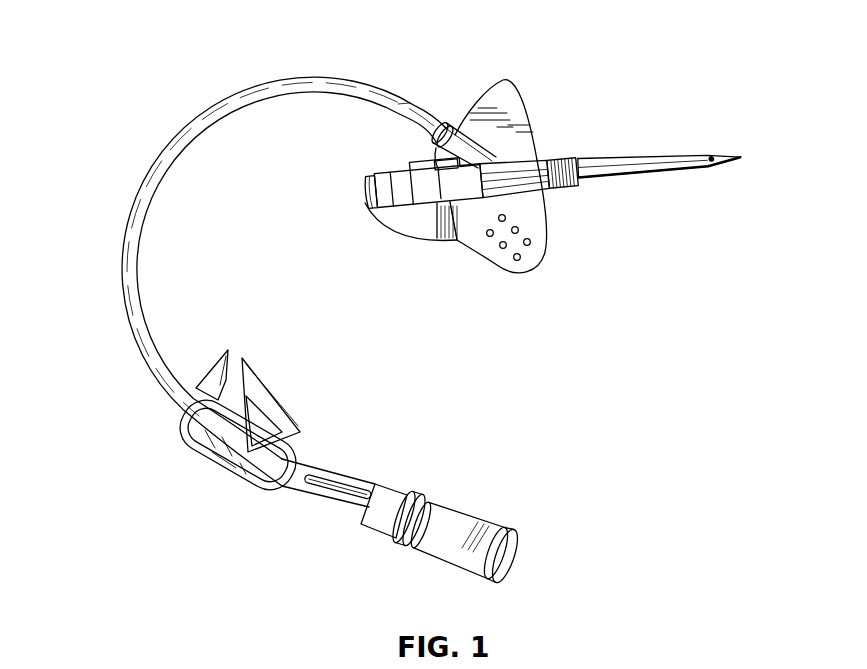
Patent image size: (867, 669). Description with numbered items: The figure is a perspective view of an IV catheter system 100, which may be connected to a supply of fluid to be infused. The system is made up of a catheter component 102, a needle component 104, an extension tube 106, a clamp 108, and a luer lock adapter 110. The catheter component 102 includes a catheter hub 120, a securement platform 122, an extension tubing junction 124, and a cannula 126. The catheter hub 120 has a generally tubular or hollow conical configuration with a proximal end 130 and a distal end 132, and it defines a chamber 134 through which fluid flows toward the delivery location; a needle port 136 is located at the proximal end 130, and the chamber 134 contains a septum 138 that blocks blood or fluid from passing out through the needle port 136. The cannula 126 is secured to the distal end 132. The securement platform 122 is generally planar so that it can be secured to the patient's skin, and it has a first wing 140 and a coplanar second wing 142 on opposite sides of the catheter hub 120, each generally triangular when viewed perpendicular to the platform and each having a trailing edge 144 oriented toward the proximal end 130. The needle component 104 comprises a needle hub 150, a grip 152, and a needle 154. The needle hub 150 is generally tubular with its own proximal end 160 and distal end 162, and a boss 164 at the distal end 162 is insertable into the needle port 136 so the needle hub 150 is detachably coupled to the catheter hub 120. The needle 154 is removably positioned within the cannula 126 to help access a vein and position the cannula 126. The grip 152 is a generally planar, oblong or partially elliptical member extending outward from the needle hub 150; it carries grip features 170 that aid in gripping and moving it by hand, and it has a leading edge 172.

The IV catheter system 100 is at (152, 57).
The catheter component 102 is at (603, 78).
The needle component 104 is at (400, 277).
The extension tube 106 is at (150, 168).
The clamp 108 is at (282, 412).
The luer lock adapter 110 is at (453, 525).
The catheter hub 120 is at (493, 207).
The securement platform 122 is at (467, 63).
The extension tubing junction 124 is at (443, 117).
The cannula 126 is at (669, 168).
The proximal end 130 is at (400, 112).
The distal end 132 is at (570, 157).
The chamber 134 is at (518, 158).
The needle port 136 is at (420, 207).
The septum 138 is at (450, 238).
The first wing 140 is at (555, 202).
The second wing 142 is at (523, 82).
The trailing edge 144 is at (500, 78).
The needle hub 150 is at (337, 195).
The grip 152 is at (465, 335).
The needle 154 is at (713, 165).
The proximal end 160 is at (360, 177).
The distal end 162 is at (383, 208).
The boss 164 is at (423, 177).
The grip features 170 is at (517, 262).
The leading edge 172 is at (550, 250).